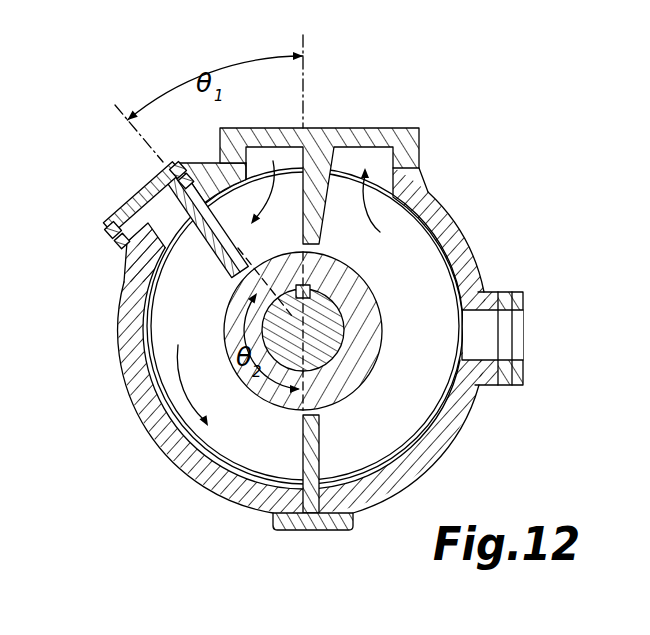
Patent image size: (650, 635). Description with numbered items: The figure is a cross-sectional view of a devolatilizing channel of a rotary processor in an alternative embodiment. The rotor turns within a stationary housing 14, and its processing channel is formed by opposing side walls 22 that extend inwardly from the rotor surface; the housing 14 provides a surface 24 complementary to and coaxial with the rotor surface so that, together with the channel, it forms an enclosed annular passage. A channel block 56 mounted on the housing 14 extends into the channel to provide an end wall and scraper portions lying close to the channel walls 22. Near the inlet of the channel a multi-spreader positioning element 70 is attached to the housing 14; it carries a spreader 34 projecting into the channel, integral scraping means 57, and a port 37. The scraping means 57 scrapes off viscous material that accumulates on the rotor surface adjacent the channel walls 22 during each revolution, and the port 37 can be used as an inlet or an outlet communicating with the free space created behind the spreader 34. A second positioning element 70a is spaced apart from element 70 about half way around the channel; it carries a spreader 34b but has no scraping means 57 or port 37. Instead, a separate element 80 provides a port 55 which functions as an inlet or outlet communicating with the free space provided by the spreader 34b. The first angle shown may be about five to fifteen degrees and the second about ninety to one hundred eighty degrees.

The housing 14 is at (132, 383).
The side walls 22 is at (157, 442).
The surface 24 is at (437, 210).
The spreader 34 is at (221, 257).
The spreader 34b is at (322, 466).
The port 37 is at (141, 218).
The port 55 is at (503, 343).
The channel block 56 is at (360, 132).
The scraping means 57 is at (174, 205).
The multi-spreader positioning element 70 is at (113, 238).
The multi-spreader positioning element 70a is at (292, 528).
The element 80 is at (510, 292).